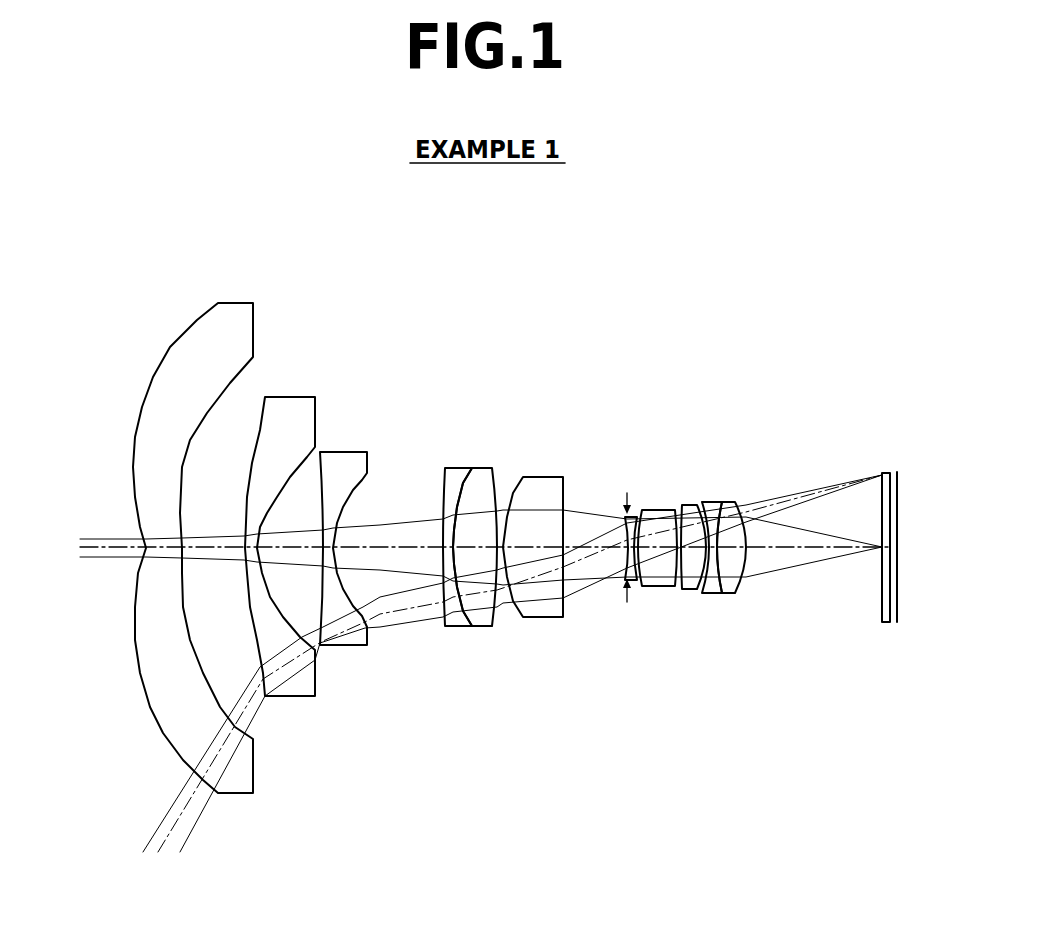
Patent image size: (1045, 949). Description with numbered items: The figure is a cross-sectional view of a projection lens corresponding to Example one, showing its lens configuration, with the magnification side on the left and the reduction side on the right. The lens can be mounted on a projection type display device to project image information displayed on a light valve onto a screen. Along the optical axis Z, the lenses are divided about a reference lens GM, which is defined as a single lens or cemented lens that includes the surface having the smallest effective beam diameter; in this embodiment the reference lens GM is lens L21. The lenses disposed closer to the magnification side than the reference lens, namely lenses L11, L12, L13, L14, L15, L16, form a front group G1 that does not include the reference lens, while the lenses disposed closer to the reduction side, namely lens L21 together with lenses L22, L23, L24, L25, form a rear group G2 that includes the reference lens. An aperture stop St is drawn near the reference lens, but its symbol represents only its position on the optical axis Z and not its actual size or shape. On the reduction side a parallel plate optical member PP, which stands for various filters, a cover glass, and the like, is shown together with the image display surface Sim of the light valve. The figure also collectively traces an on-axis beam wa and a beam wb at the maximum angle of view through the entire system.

The front group G1 is at (515, 241).
The rear group G2 is at (843, 241).
The reference lens GM is at (618, 412).
The lens L11 is at (238, 303).
The lens L12 is at (290, 397).
The lens L13 is at (345, 452).
The lens L14 is at (456, 468).
The lens L15 is at (481, 468).
The lens L16 is at (541, 477).
The lens L21 is at (631, 517).
The lens L22 is at (658, 510).
The lens L23 is at (689, 505).
The lens L24 is at (712, 502).
The lens L25 is at (728, 502).
The aperture stop St is at (627, 602).
The parallel plate optical member PP is at (876, 621).
The image display surface Sim is at (897, 622).
The optical axis Z is at (99, 540).
The on-axis beam wa is at (98, 559).
The beam with a maximum angle of view wb is at (206, 824).